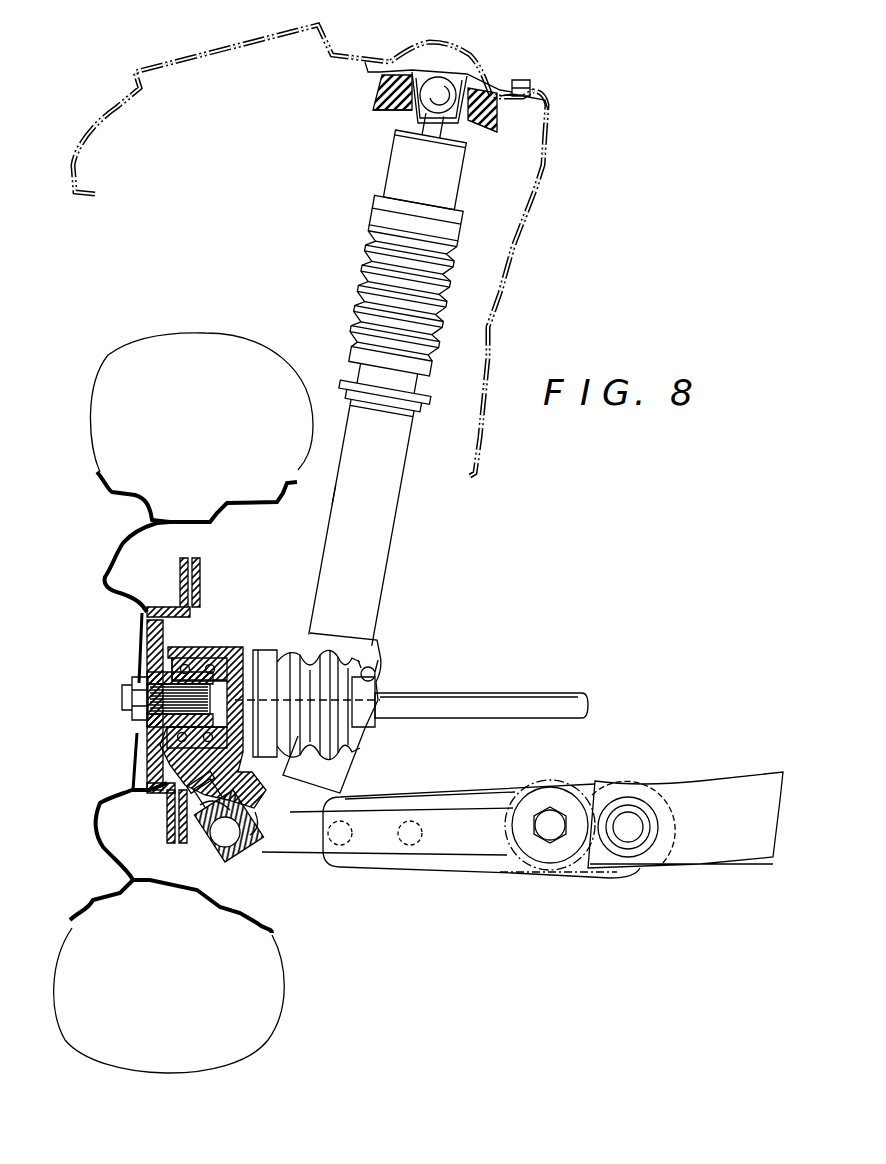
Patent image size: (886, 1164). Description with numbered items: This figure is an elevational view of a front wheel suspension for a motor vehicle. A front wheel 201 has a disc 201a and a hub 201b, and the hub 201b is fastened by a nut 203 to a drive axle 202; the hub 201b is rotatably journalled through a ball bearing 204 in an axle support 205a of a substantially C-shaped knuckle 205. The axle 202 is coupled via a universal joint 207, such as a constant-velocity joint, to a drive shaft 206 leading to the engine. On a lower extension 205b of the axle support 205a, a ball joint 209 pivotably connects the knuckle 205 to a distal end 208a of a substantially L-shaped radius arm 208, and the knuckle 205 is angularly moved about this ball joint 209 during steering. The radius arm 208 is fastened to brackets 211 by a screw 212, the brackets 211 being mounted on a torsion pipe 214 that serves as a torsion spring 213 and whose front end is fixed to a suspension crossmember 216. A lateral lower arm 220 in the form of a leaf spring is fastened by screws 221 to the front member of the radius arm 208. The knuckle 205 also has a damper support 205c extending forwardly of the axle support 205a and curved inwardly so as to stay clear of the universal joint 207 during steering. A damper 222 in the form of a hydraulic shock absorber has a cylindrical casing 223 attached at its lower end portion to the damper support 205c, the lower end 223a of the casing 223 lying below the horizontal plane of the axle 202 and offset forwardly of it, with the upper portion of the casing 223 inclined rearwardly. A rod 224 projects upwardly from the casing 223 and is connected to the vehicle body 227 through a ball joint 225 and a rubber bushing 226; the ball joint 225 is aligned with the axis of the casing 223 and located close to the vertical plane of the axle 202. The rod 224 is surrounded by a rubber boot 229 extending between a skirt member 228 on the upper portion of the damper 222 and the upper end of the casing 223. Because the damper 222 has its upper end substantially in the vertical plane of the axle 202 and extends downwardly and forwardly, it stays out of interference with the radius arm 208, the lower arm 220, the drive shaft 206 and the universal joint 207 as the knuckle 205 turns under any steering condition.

The front wheel 201 is at (110, 398).
The disc 201a is at (118, 592).
The hub 201b is at (130, 683).
The drive axle 202 is at (132, 718).
The nut 203 is at (120, 700).
The ball bearing 204 is at (195, 660).
The knuckle 205 is at (180, 770).
The axle support 205a is at (222, 652).
The lower extension 205b is at (262, 838).
The damper support 205c is at (373, 652).
The drive shaft 206 is at (503, 693).
The universal joint 207 is at (290, 648).
The radius arm 208 is at (462, 857).
The distal end 208a is at (210, 880).
The ball joint 209 is at (222, 845).
The brackets 211 is at (520, 862).
The screw 212 is at (550, 832).
The torsion spring 213 is at (626, 852).
The torsion pipe 214 is at (660, 835).
The suspension crossmember 216 is at (668, 800).
The lateral lower arm 220 is at (462, 797).
The screws 221 is at (410, 845).
The damper 222 is at (405, 517).
The cylindrical casing 223 is at (378, 548).
The lower end 223a is at (340, 772).
The rod 224 is at (453, 132).
The ball joint 225 is at (436, 93).
The rubber bushing 226 is at (478, 85).
The vehicle body 227 is at (548, 115).
The skirt member 228 is at (398, 168).
The rubber boot 229 is at (368, 283).